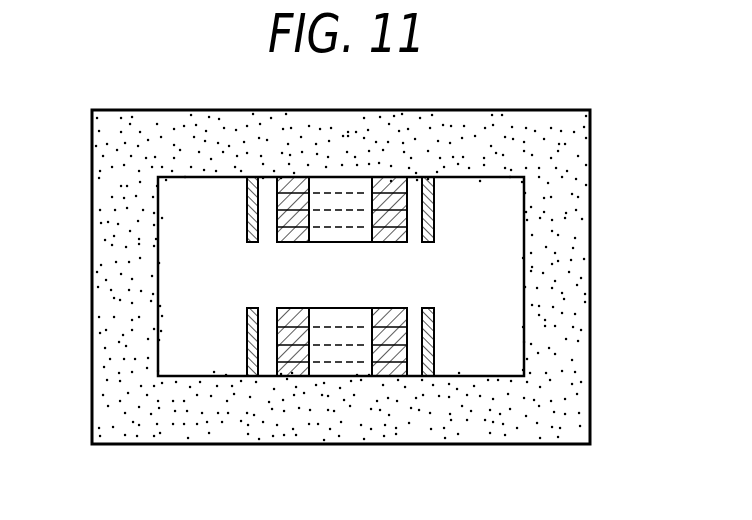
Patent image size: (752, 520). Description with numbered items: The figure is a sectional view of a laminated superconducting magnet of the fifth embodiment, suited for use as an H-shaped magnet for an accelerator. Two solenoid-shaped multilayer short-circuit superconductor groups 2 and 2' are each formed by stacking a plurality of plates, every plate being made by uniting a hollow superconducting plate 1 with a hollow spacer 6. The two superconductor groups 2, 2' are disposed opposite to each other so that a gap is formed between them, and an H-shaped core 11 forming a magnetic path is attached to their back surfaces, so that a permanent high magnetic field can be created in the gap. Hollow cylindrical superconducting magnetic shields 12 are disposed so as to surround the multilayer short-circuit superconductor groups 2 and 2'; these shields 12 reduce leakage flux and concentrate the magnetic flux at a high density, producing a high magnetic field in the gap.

The hollow superconducting plate 1 is at (292, 377).
The multilayer short-circuit superconductor group 2 is at (400, 399).
The multilayer short-circuit superconductor group 2' is at (416, 155).
The hollow spacer 6 is at (376, 377).
The H-shaped core 11 is at (567, 312).
The hollow cylindrical superconducting magnetic shield 12 is at (437, 203).